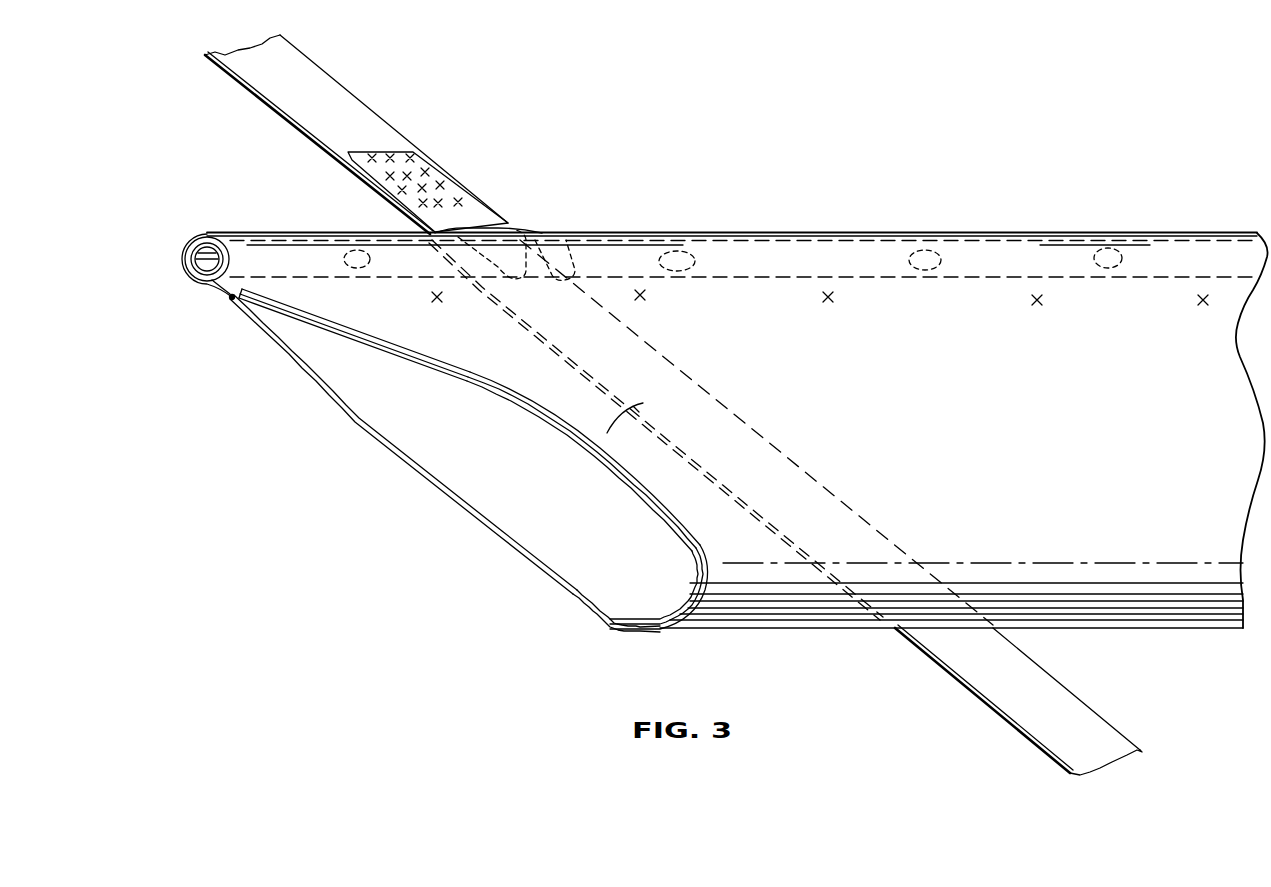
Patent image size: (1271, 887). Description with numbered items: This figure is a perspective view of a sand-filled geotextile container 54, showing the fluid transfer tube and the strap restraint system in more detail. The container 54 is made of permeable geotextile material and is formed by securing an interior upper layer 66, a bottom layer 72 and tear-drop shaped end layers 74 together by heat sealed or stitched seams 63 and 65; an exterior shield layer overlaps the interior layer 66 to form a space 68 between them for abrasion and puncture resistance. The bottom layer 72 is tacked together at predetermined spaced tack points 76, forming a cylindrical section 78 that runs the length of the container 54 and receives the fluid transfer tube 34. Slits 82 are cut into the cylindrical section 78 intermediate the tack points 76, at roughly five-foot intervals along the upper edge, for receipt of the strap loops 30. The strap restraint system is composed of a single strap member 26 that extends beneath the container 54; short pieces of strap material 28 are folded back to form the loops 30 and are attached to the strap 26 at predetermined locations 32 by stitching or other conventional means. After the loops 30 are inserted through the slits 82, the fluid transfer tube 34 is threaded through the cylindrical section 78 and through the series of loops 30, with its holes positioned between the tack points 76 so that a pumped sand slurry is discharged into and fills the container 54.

The strap member 26 is at (378, 133).
The short pieces of strap material 28 is at (482, 222).
The loops 30 is at (548, 250).
The predetermined locations 32 is at (447, 175).
The fluid transfer tube 34 is at (195, 267).
The geotextile container 54 is at (951, 437).
The seam 63 is at (572, 593).
The seam 65 is at (283, 295).
The interior layer 66 is at (553, 413).
The space 68 is at (697, 545).
The bottom layer 72 is at (237, 255).
The end layers 74 is at (450, 428).
The tack points 76 is at (444, 298).
The cylindrical section 78 is at (203, 233).
The slits 82 is at (656, 430).